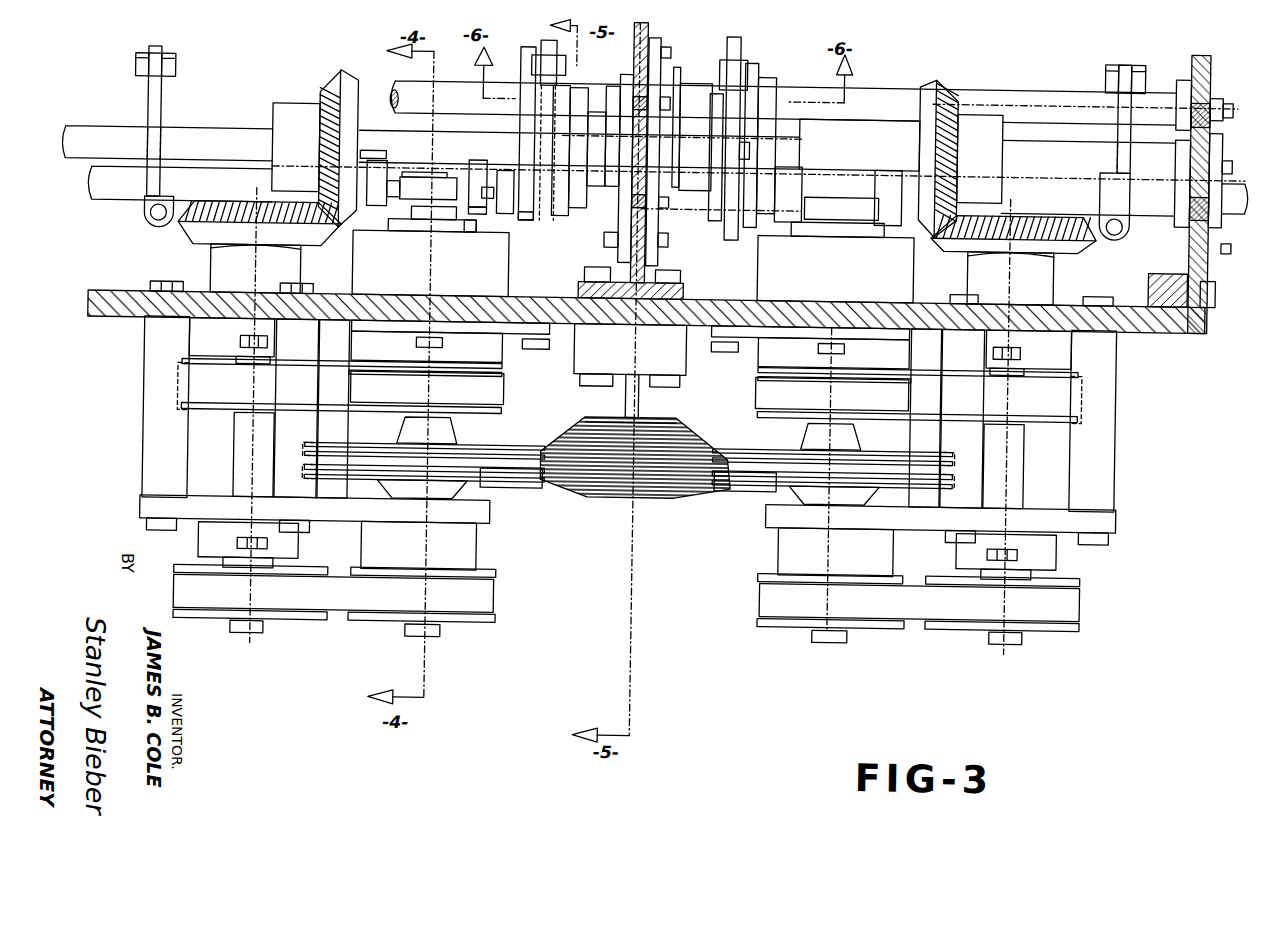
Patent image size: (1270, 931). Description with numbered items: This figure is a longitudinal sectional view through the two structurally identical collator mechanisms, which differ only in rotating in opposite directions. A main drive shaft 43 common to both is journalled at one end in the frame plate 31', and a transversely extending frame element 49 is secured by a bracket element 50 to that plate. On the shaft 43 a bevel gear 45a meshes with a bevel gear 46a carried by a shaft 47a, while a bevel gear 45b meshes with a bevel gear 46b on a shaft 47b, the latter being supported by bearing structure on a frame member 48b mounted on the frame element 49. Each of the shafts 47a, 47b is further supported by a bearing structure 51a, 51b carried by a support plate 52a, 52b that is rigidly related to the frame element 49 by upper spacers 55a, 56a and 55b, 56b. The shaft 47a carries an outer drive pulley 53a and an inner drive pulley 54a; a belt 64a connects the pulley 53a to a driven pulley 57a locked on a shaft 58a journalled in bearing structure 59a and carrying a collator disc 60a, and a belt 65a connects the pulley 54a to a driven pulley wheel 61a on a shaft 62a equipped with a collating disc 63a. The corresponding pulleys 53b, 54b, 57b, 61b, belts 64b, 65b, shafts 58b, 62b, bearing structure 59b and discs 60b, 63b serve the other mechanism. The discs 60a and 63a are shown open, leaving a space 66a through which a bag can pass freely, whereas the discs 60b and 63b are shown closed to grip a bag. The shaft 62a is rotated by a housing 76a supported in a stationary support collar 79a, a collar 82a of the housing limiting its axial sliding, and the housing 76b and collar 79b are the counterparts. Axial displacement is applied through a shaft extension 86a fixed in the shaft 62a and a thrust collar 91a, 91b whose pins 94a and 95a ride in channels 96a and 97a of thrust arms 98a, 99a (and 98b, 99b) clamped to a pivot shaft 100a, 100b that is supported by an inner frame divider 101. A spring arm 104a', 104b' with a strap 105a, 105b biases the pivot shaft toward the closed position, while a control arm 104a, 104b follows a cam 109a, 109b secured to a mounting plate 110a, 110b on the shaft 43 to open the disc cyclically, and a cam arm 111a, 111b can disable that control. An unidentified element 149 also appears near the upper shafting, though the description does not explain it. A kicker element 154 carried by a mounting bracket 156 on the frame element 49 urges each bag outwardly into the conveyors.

The frame plate 31' is at (1202, 227).
The main drive shaft 43 is at (882, 136).
The bevel gear 45a is at (323, 82).
The bevel gear 45b is at (942, 95).
The bevel gear 46a is at (190, 232).
The bevel gear 46b is at (1088, 222).
The shaft 47a is at (240, 461).
The shaft 47b is at (1026, 552).
The frame member 48b is at (1056, 303).
The frame element 49 is at (1142, 316).
The bracket element 50 is at (1163, 262).
The bearing structure 51a is at (202, 546).
The bearing structure 51b is at (1046, 558).
The support plate 52a is at (150, 503).
The support plate 52b is at (966, 525).
The outer drive pulley 53a is at (306, 614).
The outer drive pulley 53b is at (1026, 617).
The inner drive pulley 54a is at (199, 355).
The inner drive pulley 54b is at (1075, 389).
The upper spacer 55a is at (150, 414).
The upper spacer 55b is at (1119, 421).
The upper spacer 56a is at (282, 430).
The upper spacer 56b is at (1004, 419).
The driven pulley 57a is at (474, 617).
The driven pulley 57b is at (836, 621).
The shaft 58a is at (411, 626).
The shaft 58b is at (812, 648).
The bearing structure 59a is at (404, 549).
The bearing structure 59b is at (836, 552).
The collator disc 60a is at (521, 480).
The collator disc 60b is at (745, 497).
The driven pulley wheel 61a is at (501, 407).
The driven pulley wheel 61b is at (896, 419).
The shaft 62a is at (442, 205).
The shaft 62b is at (858, 437).
The collating disc 63a is at (525, 442).
The collating disc 63b is at (832, 460).
The belt 64a is at (297, 604).
The belt 64b is at (947, 603).
The belt 65a is at (488, 381).
The belt 65b is at (894, 390).
The space 66a is at (477, 455).
The housing 76a is at (403, 224).
The housing 76b is at (805, 224).
The support collar 79a is at (470, 285).
The support collar 79b is at (870, 288).
The collar 82a is at (468, 226).
The shaft extension 86a is at (432, 168).
The collar 91a is at (417, 178).
The collar 91b is at (845, 190).
The pin 94a is at (372, 149).
The pin 95a is at (480, 164).
The channel 96a is at (391, 175).
The channel 97a is at (466, 208).
The thrust arm 98a is at (373, 165).
The thrust arm 98b is at (883, 212).
The thrust arm 99a is at (480, 205).
The thrust arm 99b is at (773, 210).
The pivot shaft 100a is at (115, 186).
The pivot shaft 100b is at (1045, 170).
The inner frame divider 101 is at (641, 30).
The control arm 104a is at (511, 133).
The spring arm 104a' is at (193, 137).
The control arm 104b is at (783, 142).
The spring arm 104b' is at (1091, 152).
The strap 105a is at (165, 60).
The strap 105b is at (1132, 52).
The cam 109a is at (540, 72).
The cam 109b is at (731, 78).
The mounting plate 110a is at (562, 96).
The mounting plate 110b is at (712, 86).
The cam arm 111a is at (523, 218).
The cam arm 111b is at (748, 141).
The shaft end 149 is at (390, 86).
The kicker element 154 is at (590, 492).
The mounting bracket 156 is at (592, 334).